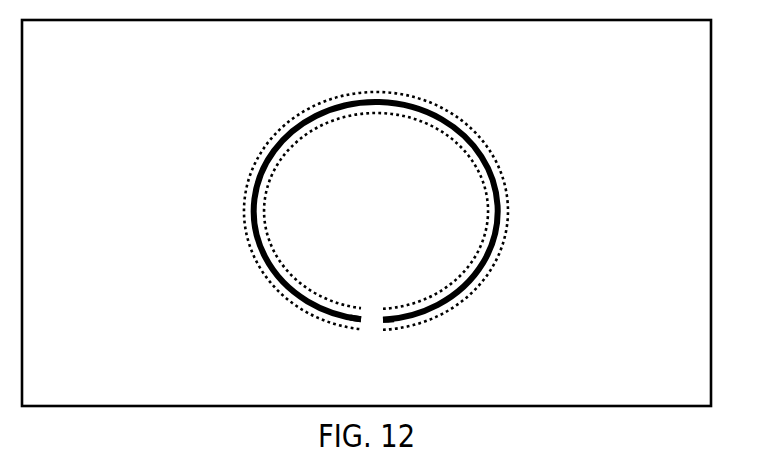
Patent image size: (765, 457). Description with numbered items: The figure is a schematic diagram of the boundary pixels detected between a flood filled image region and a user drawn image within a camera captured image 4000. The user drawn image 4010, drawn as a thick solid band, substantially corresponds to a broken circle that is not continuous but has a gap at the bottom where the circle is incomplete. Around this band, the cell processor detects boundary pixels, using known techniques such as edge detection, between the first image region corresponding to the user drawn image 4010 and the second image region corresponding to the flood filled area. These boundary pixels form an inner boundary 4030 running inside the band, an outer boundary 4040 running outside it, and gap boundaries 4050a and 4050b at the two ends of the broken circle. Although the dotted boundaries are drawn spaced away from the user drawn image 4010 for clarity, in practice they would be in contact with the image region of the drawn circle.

The camera captured image 4000 is at (137, 379).
The user drawn image 4010 is at (475, 140).
The inner boundary 4030 is at (488, 217).
The outer boundary 4040 is at (507, 202).
The gap boundary 4050a is at (361, 314).
The gap boundary 4050b is at (383, 312).